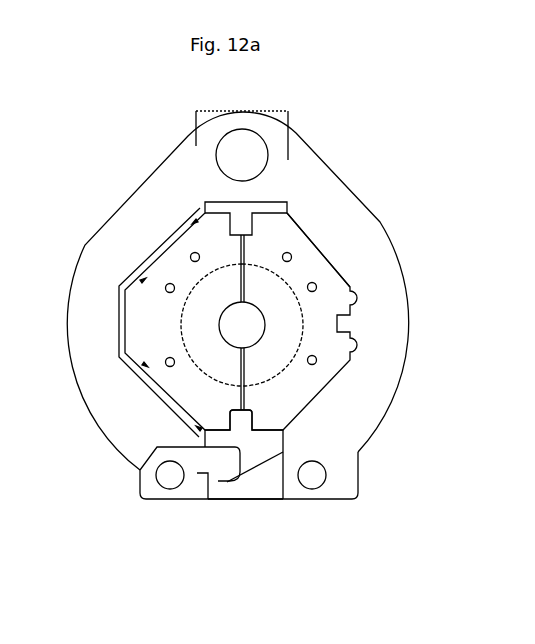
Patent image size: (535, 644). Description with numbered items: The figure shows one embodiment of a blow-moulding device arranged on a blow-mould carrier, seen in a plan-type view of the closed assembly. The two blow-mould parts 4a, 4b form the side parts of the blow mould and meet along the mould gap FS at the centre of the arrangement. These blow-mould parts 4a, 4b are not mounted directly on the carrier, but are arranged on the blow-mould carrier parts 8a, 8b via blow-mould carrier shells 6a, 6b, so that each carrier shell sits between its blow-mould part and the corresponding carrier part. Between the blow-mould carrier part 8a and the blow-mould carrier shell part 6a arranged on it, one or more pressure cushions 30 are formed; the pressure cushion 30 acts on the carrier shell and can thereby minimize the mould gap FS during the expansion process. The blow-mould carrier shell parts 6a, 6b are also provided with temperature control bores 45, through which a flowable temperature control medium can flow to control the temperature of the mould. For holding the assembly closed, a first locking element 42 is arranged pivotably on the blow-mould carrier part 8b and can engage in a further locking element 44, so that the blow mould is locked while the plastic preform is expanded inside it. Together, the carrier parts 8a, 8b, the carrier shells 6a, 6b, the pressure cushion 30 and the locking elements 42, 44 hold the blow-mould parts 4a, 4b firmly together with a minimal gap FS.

The blow-mould carrier part 8a is at (140, 227).
The blow-mould carrier part 8b is at (333, 230).
The blow-mould carrier shell 6a is at (205, 248).
The blow-mould carrier shell 6b is at (243, 297).
The mould gap FS is at (287, 226).
The temperature control bores 45 is at (316, 285).
The pressure cushion 30 is at (143, 277).
The blow-mould part 4a is at (205, 338).
The blow-mould part 4b is at (278, 340).
The first locking element 42 is at (225, 458).
The further locking element 44 is at (233, 490).